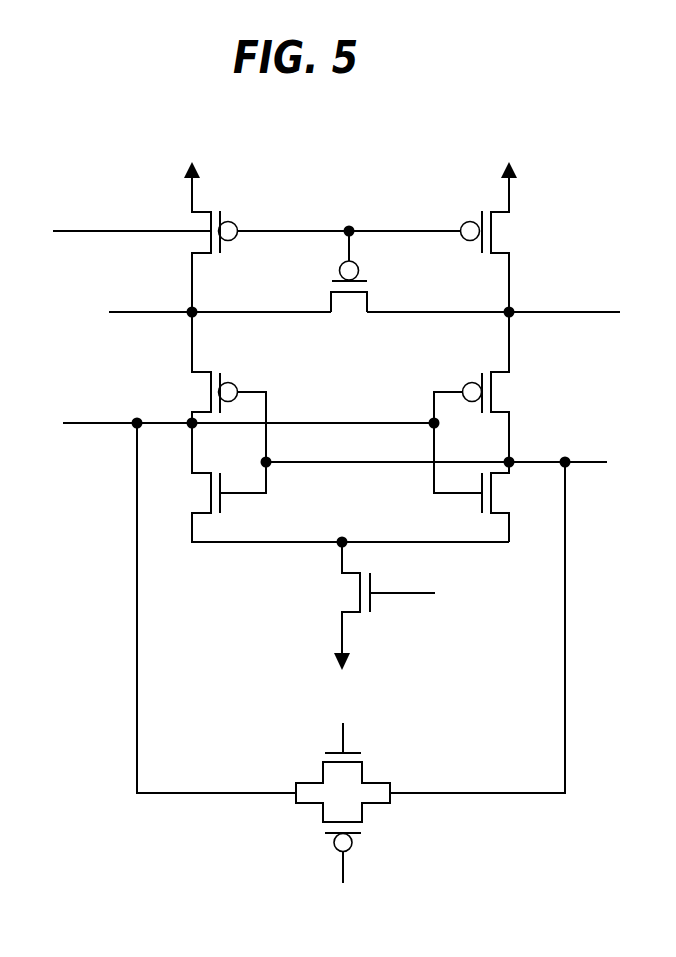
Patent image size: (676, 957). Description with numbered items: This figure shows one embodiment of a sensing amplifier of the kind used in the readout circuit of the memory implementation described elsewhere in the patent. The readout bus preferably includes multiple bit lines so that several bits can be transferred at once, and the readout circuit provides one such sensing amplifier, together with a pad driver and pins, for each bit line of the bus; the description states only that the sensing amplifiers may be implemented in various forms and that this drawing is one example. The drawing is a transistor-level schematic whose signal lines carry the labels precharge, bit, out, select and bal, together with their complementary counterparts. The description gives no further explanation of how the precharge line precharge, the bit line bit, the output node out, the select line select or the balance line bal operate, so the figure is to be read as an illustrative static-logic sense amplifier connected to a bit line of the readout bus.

The precharge control signal line precharge is at (256, 226).
The bit line bit is at (220, 303).
The output node out is at (452, 453).
The select control signal line select is at (426, 580).
The balance control signal bal is at (359, 738).